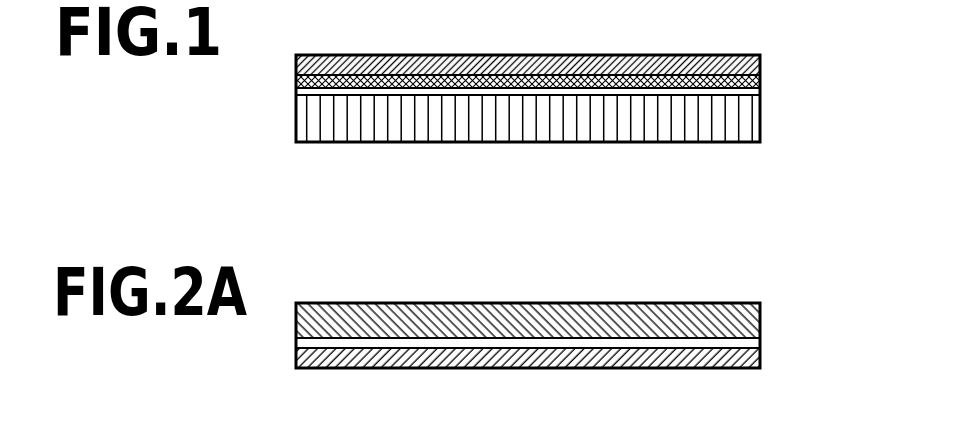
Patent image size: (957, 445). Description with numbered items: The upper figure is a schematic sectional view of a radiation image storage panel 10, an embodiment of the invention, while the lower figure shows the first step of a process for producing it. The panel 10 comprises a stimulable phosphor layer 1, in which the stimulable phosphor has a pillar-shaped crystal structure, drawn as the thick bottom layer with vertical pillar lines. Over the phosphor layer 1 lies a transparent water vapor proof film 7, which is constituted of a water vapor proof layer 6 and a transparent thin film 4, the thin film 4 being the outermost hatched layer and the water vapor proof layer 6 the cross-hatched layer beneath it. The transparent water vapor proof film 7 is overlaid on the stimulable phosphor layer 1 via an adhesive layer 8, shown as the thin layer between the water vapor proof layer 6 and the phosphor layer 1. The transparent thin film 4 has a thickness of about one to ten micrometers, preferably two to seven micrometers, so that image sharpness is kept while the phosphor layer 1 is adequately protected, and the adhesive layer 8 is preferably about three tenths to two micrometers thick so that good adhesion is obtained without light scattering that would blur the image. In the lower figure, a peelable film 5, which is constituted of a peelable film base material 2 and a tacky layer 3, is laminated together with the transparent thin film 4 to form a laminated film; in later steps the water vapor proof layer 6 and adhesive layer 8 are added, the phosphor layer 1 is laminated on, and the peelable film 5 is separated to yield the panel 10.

In FIG. 1, the radiation image storage panel 10 is at (632, 45).
In FIG. 1, the transparent water vapor proof film 7 is at (585, 56).
In FIG. 1, the transparent thin film 4 is at (760, 62).
In FIG. 2A, the transparent thin film 4 is at (760, 358).
In FIG. 1, the water vapor proof layer 6 is at (564, 72).
In FIG. 1, the adhesive layer 8 is at (760, 94).
In FIG. 1, the stimulable phosphor layer 1 is at (757, 128).
In FIG. 2A, the peelable film 5 is at (585, 318).
In FIG. 2A, the peelable film base material 2 is at (760, 325).
In FIG. 2A, the tacky layer 3 is at (564, 334).